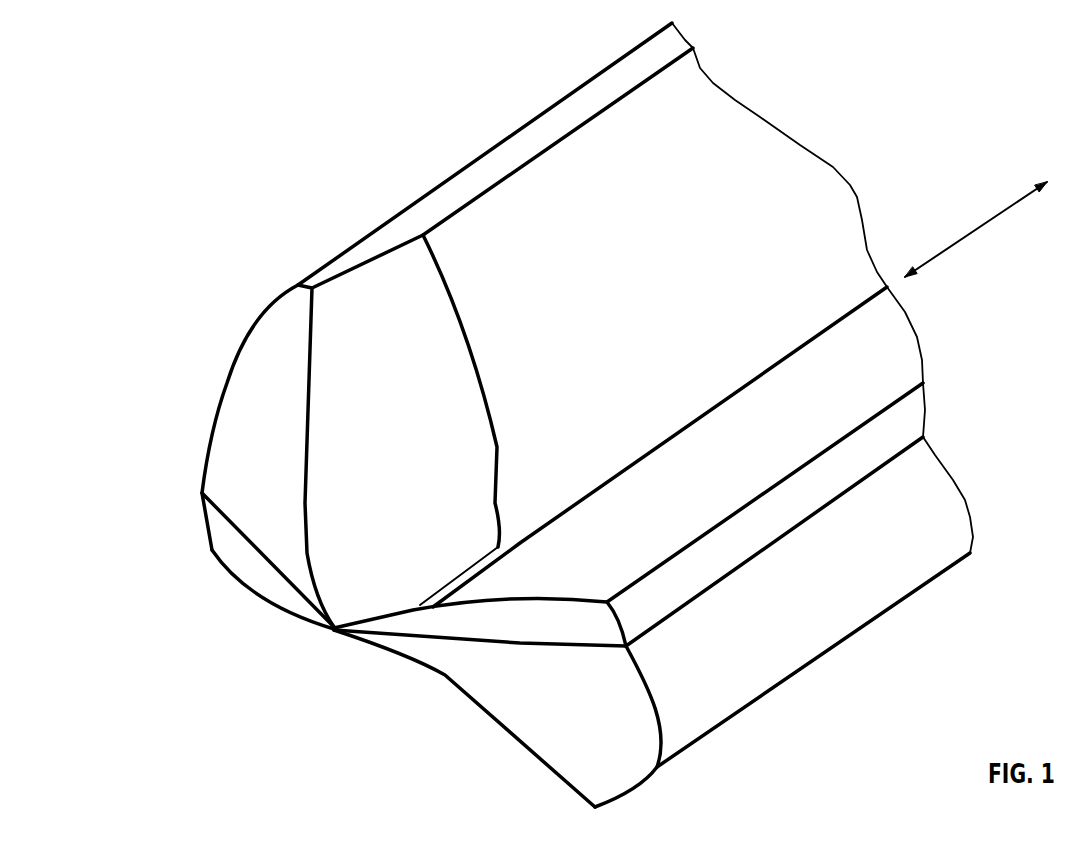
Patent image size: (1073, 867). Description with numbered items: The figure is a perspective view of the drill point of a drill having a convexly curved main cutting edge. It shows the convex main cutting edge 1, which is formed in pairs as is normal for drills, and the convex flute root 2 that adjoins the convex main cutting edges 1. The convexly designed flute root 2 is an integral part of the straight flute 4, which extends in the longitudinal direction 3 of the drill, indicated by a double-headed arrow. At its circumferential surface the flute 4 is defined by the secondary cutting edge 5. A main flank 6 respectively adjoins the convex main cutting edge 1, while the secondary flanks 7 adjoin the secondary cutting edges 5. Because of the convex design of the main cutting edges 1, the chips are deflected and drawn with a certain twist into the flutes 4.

The convex main cutting edge 1 is at (257, 597).
The convex flute root 2 is at (882, 363).
The longitudinal direction 3 is at (977, 230).
The straight flute 4 is at (822, 230).
The secondary cutting edge 5 is at (870, 475).
The main flank 6 is at (243, 403).
The secondary flank 7 is at (383, 232).